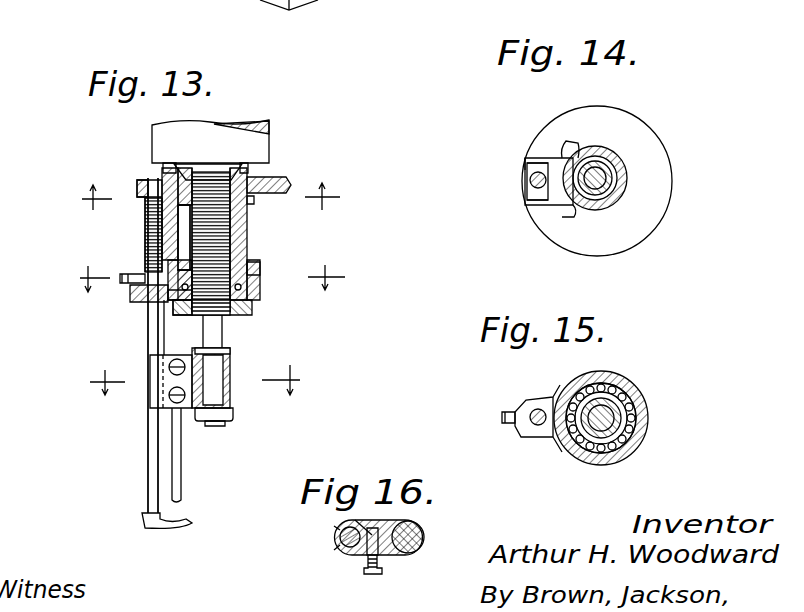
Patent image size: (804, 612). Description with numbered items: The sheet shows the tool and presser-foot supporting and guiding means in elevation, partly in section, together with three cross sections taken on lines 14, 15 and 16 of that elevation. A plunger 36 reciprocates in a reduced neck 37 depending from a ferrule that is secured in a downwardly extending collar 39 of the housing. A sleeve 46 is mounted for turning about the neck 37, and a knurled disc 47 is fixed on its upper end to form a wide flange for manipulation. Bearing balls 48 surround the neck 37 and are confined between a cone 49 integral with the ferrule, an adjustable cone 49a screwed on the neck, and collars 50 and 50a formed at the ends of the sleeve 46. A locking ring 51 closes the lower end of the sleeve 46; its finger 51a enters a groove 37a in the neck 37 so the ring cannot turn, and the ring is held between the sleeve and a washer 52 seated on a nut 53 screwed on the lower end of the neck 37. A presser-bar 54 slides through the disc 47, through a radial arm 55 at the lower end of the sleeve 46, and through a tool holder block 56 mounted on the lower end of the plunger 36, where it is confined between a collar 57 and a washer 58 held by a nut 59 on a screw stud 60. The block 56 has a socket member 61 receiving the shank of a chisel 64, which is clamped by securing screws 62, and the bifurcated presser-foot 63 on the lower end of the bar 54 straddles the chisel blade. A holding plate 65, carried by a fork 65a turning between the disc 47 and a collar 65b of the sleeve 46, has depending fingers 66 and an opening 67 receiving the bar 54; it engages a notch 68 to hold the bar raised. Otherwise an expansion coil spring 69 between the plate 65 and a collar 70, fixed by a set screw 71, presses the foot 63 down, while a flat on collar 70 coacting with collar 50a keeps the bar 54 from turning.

In FIG. 13, the section line 14— 14 is at (209, 197).
In FIG. 13, the section line 15— 15 is at (207, 278).
In FIG. 13, the section line 16— 16 is at (194, 380).
In FIG. 13, the plunger 36 is at (222, 333).
In FIG. 14, the plunger 36 is at (612, 184).
In FIG. 15, the plunger 36 is at (597, 463).
In FIG. 16, the plunger 36 is at (421, 532).
In FIG. 13, the reduced neck 37 is at (243, 240).
In FIG. 14, the reduced neck 37 is at (613, 212).
In FIG. 15, the reduced neck 37 is at (633, 432).
In FIG. 13, the groove 37a is at (178, 238).
In FIG. 15, the groove 37a is at (560, 440).
In FIG. 13, the collar 39 is at (263, 143).
In FIG. 13, the sleeve 46 is at (247, 225).
In FIG. 14, the sleeve 46 is at (627, 165).
In FIG. 13, the disc 47 is at (137, 186).
In FIG. 14, the disc 47 is at (640, 125).
In FIG. 13, the bearing balls 48 is at (267, 172).
In FIG. 15, the bearing balls 48 is at (632, 411).
In FIG. 13, the cone 49 is at (196, 168).
In FIG. 13, the cone 49a is at (255, 295).
In FIG. 15, the cone 49a is at (594, 378).
In FIG. 13, the collar 50 is at (165, 172).
In FIG. 13, the collar 50a is at (260, 262).
In FIG. 15, the collar 50a is at (642, 398).
In FIG. 13, the locking ring 51 is at (173, 308).
In FIG. 13, the finger 51a is at (180, 315).
In FIG. 13, the washer 52 is at (252, 310).
In FIG. 13, the nut 53 is at (164, 320).
In FIG. 13, the presser-bar 54 is at (153, 466).
In FIG. 14, the presser-bar 54 is at (530, 179).
In FIG. 15, the presser-bar 54 is at (536, 408).
In FIG. 16, the presser-bar 54 is at (341, 538).
In FIG. 13, the arm 55 is at (158, 316).
In FIG. 13, the block 56 is at (157, 385).
In FIG. 16, the block 56 is at (403, 556).
In FIG. 13, the collar 57 is at (230, 348).
In FIG. 13, the washer 58 is at (233, 405).
In FIG. 13, the nut 59 is at (225, 416).
In FIG. 13, the screw stud 60 is at (215, 422).
In FIG. 14, the screw stud 60 is at (530, 158).
In FIG. 16, the socket member 61 is at (362, 528).
In FIG. 13, the securing screws 62 is at (223, 380).
In FIG. 16, the securing screws 62 is at (378, 570).
In FIG. 13, the presser-foot 63 is at (154, 522).
In FIG. 13, the chisel 64 is at (181, 485).
In FIG. 16, the chisel 64 is at (353, 557).
In FIG. 14, the holding plate 65 is at (532, 203).
In FIG. 14, the fork 65a is at (568, 140).
In FIG. 13, the collar 65b is at (254, 203).
In FIG. 14, the depending finger 66 is at (540, 208).
In FIG. 14, the opening 67 is at (532, 190).
In FIG. 14, the notch 68 is at (532, 163).
In FIG. 13, the expansion coil spring 69 is at (146, 219).
In FIG. 13, the collar 70 is at (137, 300).
In FIG. 15, the collar 70 is at (540, 433).
In FIG. 13, the set screw 71 is at (120, 274).
In FIG. 15, the set screw 71 is at (503, 418).